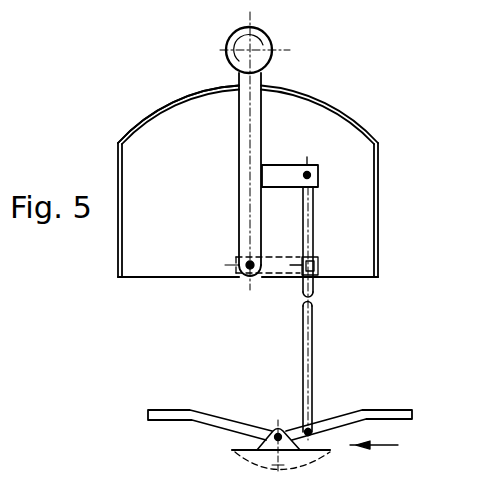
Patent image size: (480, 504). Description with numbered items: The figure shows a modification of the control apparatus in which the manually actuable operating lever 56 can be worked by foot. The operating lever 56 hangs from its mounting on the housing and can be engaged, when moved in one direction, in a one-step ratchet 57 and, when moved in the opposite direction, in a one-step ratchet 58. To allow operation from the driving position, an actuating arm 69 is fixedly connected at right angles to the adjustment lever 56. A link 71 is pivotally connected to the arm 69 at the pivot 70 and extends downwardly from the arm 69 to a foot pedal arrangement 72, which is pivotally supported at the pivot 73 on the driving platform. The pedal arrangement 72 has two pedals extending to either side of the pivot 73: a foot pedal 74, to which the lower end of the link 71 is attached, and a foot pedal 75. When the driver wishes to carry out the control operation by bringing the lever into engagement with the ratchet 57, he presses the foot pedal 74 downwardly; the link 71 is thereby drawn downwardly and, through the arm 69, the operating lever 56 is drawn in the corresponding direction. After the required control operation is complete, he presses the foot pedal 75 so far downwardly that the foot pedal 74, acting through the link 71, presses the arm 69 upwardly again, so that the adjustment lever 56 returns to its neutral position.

The operating lever 56 is at (247, 218).
The one-step ratchet 57 is at (307, 93).
The one-step ratchet 58 is at (190, 93).
The actuating arm 69 is at (285, 187).
The pivotal connection 70 is at (307, 175).
The link 71 is at (313, 308).
The foot pedal arrangement 72 is at (389, 446).
The pivotal support 73 is at (258, 440).
The foot pedal 74 is at (382, 414).
The foot pedal 75 is at (176, 415).